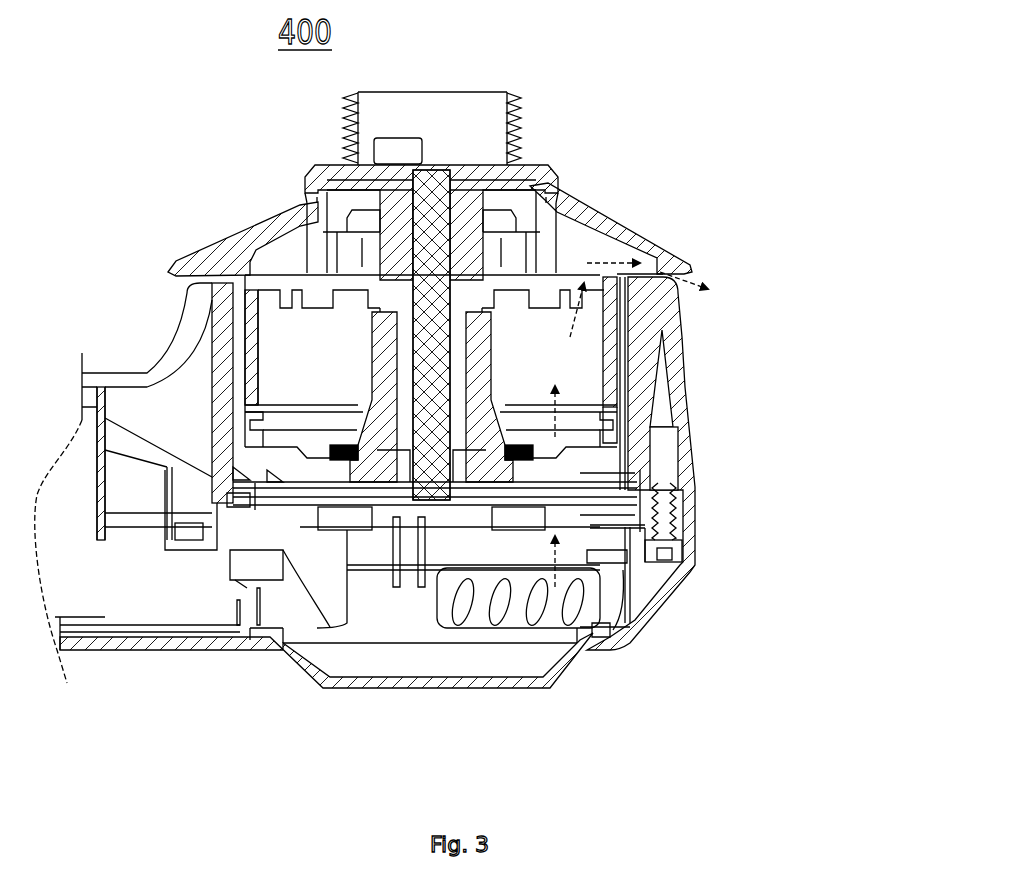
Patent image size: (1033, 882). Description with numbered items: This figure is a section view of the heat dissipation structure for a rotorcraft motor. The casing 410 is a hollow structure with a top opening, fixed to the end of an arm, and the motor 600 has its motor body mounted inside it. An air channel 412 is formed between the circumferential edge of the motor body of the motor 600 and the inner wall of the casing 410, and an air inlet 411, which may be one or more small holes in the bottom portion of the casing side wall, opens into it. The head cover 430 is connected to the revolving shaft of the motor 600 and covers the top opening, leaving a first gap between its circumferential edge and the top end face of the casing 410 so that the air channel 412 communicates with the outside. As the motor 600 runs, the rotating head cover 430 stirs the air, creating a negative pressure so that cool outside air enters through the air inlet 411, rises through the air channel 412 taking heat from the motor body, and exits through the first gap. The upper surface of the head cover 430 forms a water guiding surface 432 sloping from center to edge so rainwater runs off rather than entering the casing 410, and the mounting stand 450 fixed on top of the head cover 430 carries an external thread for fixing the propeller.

The casing 410 is at (680, 358).
The air inlet 411 is at (563, 648).
The air channel 412 is at (570, 390).
The head cover 430 is at (253, 232).
The water guiding surface 432 is at (603, 222).
The mounting stand 450 is at (517, 136).
The motor 600 is at (373, 353).